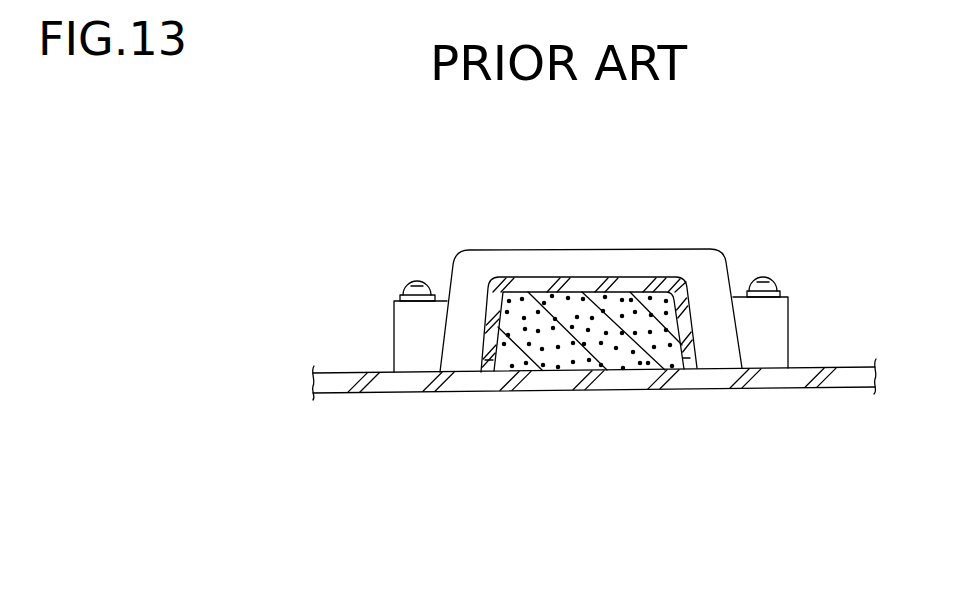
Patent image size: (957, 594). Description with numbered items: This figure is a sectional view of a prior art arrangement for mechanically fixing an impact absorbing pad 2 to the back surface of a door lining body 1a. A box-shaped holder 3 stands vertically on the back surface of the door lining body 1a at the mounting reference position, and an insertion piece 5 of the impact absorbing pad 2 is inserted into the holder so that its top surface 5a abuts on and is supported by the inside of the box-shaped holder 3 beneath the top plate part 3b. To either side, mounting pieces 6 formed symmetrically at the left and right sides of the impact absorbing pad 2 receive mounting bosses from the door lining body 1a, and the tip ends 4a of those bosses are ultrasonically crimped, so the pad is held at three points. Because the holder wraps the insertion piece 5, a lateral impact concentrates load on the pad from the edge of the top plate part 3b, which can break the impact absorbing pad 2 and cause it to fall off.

The door lining body 1a is at (452, 386).
The impact absorbing pad 2 is at (527, 258).
The box-shaped holder 3 is at (663, 277).
The top plate part 3b is at (583, 284).
The tip ends 4a is at (408, 282).
The insertion piece 5 is at (573, 352).
The top surface 5a is at (632, 292).
The mounting pieces 6 is at (400, 332).